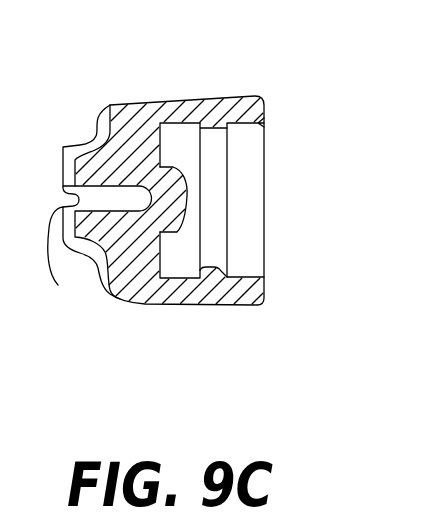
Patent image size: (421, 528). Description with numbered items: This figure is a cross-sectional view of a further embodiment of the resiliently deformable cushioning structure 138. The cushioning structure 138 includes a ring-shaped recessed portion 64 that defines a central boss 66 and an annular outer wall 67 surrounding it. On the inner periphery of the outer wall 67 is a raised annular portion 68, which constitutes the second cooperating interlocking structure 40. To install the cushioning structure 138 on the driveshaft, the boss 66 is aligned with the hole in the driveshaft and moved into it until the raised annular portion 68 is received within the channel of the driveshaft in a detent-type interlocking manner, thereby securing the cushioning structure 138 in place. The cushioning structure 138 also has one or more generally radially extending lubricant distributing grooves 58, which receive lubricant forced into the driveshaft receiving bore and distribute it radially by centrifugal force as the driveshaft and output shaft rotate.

The cushioning structure 138 is at (300, 94).
The lubricant distributing groove 58 is at (47, 258).
The boss 66 is at (177, 200).
The raised annular portion 68 is at (206, 127).
The ring-shaped recessed portion 64 is at (177, 256).
The annular outer wall 67 is at (226, 293).
The second cooperating interlocking structure 40 is at (242, 256).